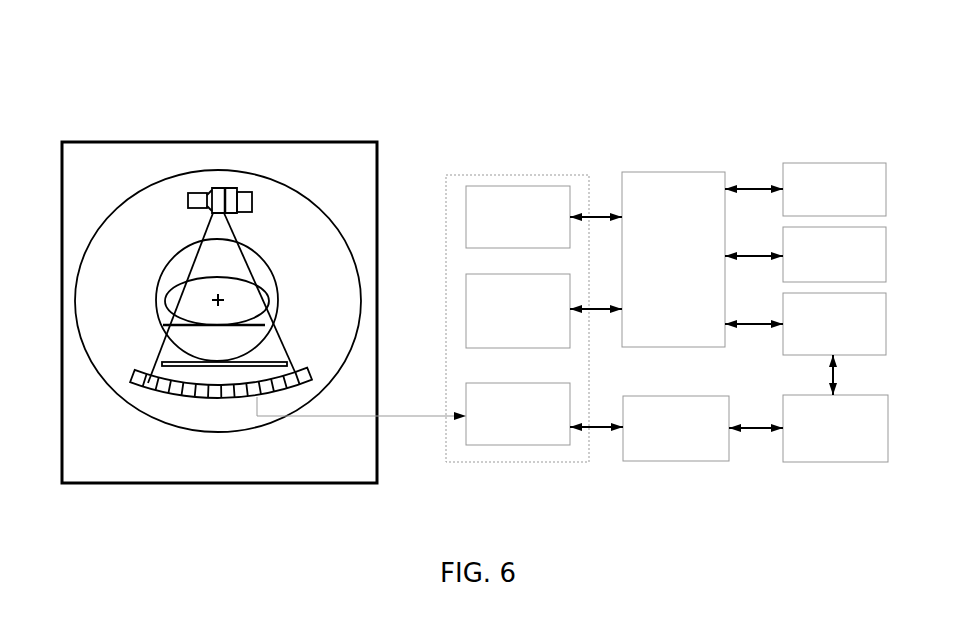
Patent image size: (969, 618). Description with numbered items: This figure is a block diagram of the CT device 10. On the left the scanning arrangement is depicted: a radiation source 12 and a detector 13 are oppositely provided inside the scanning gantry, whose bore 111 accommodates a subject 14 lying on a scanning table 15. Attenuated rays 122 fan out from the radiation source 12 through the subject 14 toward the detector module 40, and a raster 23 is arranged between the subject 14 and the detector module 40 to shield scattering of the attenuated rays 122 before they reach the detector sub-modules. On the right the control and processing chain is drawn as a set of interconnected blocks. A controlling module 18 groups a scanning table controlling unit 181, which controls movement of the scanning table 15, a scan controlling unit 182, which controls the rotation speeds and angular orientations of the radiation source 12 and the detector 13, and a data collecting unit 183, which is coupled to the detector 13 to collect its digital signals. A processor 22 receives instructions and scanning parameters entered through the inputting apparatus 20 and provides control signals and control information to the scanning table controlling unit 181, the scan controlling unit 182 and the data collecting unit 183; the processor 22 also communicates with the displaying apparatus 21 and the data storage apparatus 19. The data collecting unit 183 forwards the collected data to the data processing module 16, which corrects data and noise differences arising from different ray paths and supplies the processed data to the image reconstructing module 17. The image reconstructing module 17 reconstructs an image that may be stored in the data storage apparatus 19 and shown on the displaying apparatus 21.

The CT device 10 is at (127, 70).
The radiation source 12 is at (218, 187).
The attenuated rays 122 is at (207, 242).
The bore 111 is at (160, 283).
The subject 14 is at (273, 287).
The scanning table 15 is at (163, 323).
The raster 23 is at (273, 362).
The detector 13 is at (140, 375).
The detector module 40 is at (193, 397).
The controlling module 18 is at (538, 462).
The scanning table controlling unit 181 is at (518, 217).
The scan controlling unit 182 is at (518, 311).
The data collecting unit 183 is at (413, 414).
The processor 22 is at (673, 259).
The displaying apparatus 21 is at (834, 189).
The inputting apparatus 20 is at (834, 254).
The data storage apparatus 19 is at (834, 324).
The data processing module 16 is at (676, 428).
The image reconstructing module 17 is at (835, 428).